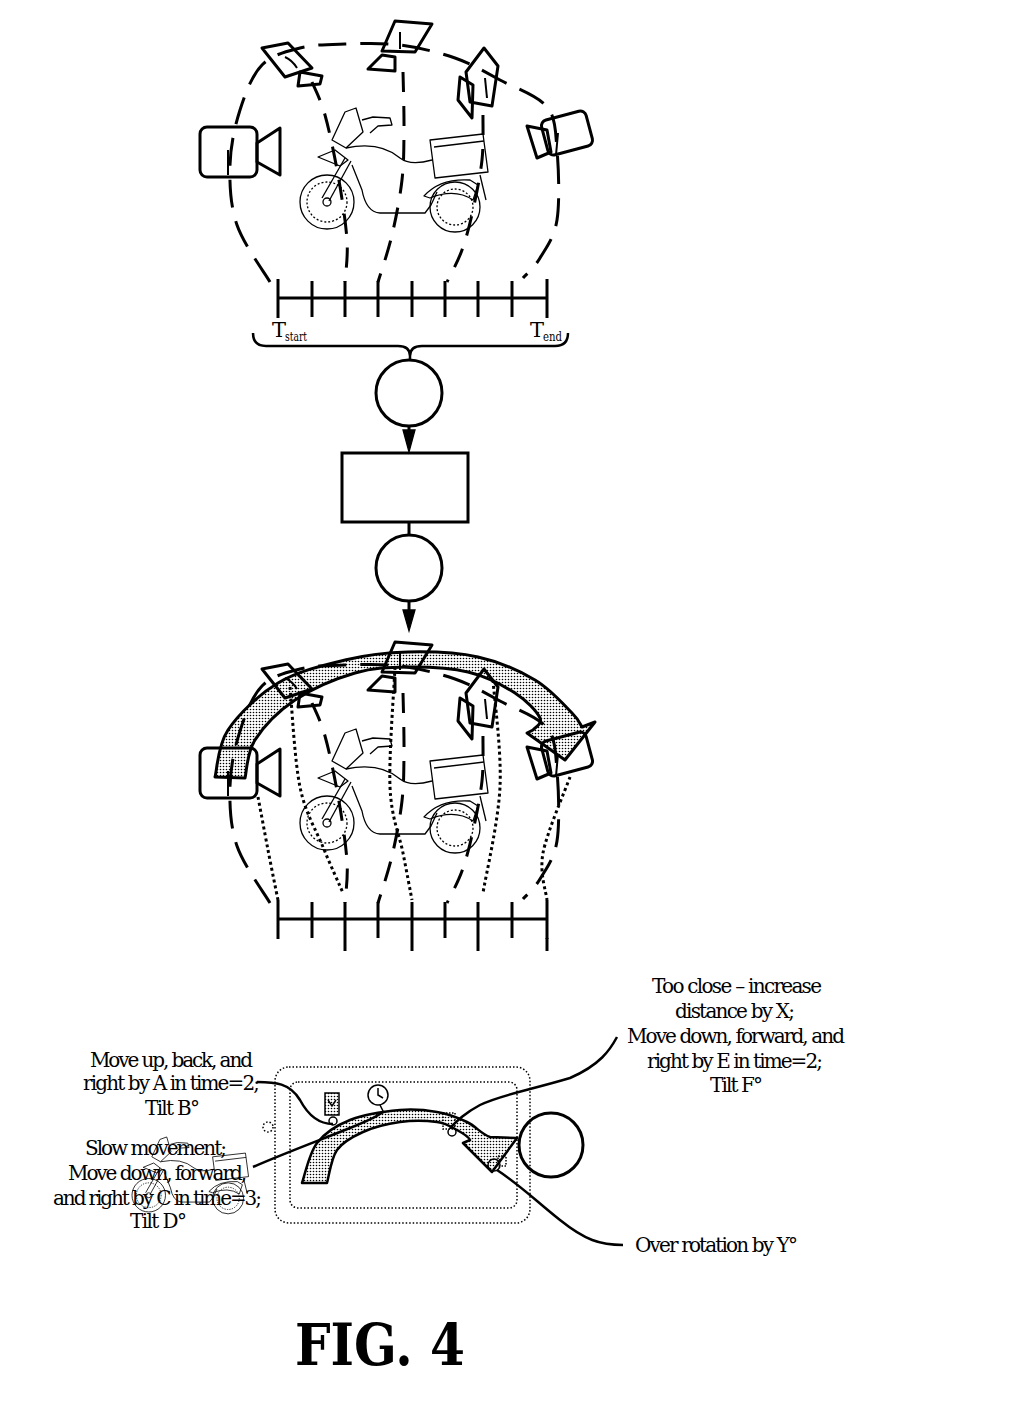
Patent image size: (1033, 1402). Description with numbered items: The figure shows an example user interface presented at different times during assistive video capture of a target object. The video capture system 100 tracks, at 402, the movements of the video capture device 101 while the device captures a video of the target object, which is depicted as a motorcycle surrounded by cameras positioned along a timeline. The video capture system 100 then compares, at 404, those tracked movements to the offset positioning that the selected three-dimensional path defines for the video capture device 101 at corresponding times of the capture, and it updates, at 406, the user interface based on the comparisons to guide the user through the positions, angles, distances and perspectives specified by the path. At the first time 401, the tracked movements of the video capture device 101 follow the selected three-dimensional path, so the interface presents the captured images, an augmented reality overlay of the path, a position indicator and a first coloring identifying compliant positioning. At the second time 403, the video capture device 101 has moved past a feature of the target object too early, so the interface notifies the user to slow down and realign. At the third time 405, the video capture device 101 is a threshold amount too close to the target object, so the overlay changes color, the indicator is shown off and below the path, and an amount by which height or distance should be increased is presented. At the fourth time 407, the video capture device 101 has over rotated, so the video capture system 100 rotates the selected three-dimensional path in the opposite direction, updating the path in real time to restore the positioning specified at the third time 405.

The video capture device 101 is at (563, 113).
The tracking of video capture device movements 402 is at (425, 405).
The video capture system 100 is at (422, 498).
The comparison of tracked movements to offset positioning 404 is at (424, 579).
The first time 401 is at (335, 1071).
The second time 403 is at (390, 1062).
The third time 405 is at (457, 1090).
The fourth time 407 is at (502, 1127).
The UI update 406 is at (566, 1154).